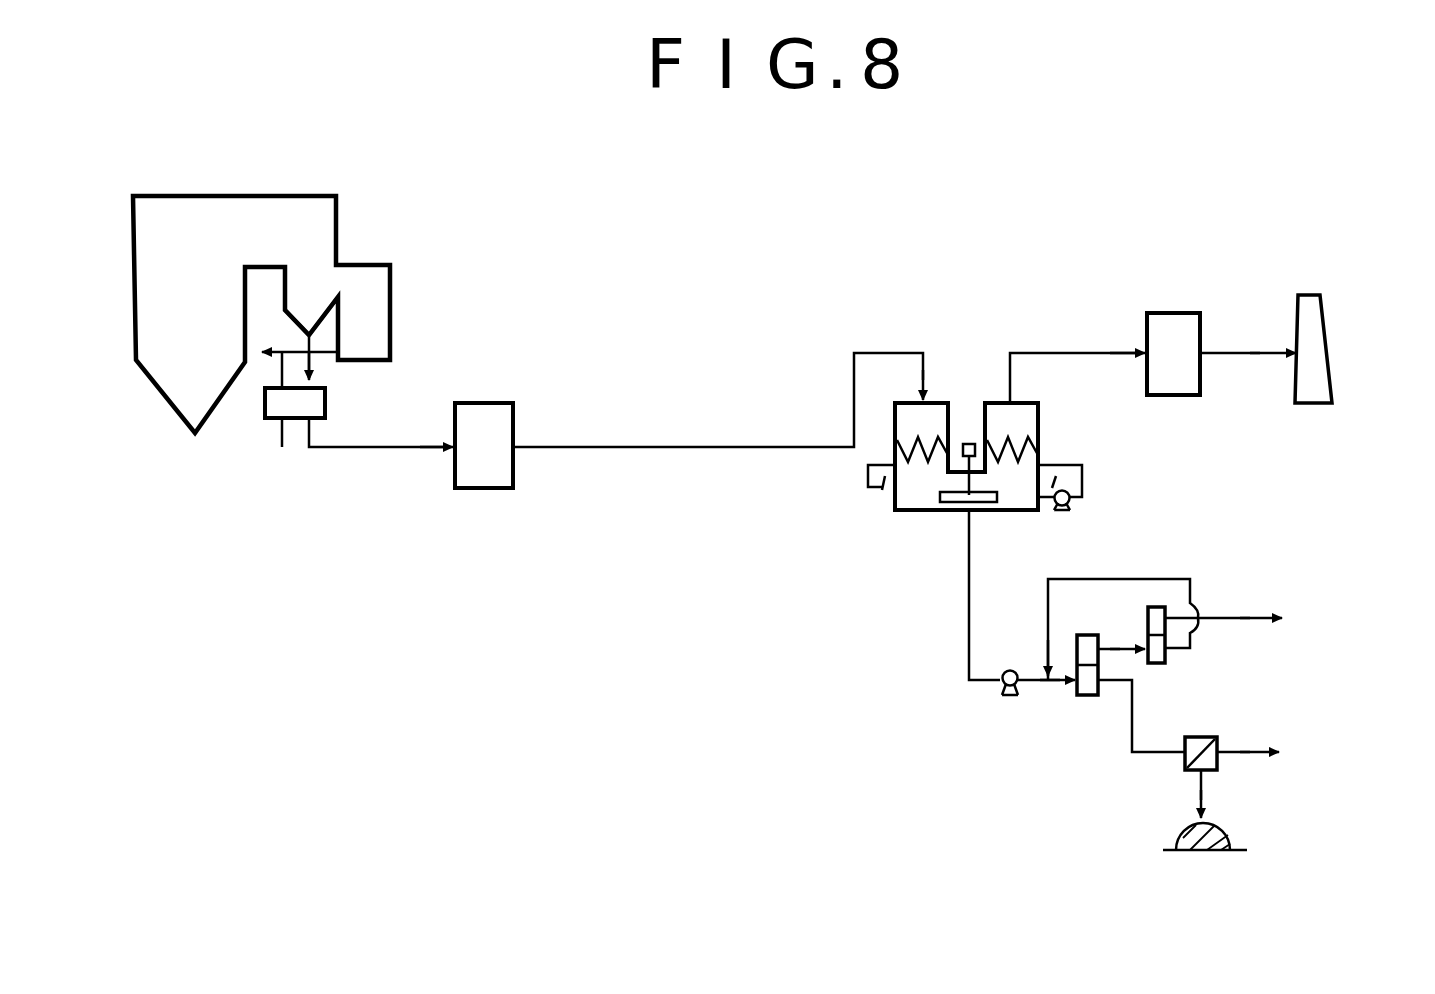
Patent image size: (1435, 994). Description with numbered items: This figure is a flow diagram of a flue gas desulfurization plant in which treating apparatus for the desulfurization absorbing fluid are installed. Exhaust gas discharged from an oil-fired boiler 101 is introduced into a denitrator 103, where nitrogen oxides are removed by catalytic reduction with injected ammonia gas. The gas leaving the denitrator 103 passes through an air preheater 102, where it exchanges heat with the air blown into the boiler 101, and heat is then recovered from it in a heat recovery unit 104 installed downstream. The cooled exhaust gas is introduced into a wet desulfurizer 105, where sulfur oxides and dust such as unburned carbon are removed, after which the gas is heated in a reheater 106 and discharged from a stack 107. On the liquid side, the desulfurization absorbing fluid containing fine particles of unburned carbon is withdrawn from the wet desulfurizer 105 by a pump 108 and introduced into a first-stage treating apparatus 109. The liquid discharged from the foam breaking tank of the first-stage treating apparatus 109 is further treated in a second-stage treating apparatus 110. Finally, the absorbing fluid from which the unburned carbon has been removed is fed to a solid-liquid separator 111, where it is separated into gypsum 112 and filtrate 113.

The oil-fired boiler 101 is at (165, 390).
The air preheater 102 is at (272, 420).
The denitrator 103 is at (392, 290).
The heat recovery unit 104 is at (485, 405).
The wet desulfurizer 105 is at (918, 512).
The reheater 106 is at (1167, 318).
The stack 107 is at (1327, 333).
The pump 108 is at (1007, 670).
The first-stage treating apparatus 109 is at (1087, 698).
The second-stage treating apparatus 110 is at (1153, 607).
The solid-liquid separator 111 is at (1197, 737).
The gypsum 112 is at (1237, 838).
The filtrate 113 is at (1278, 754).